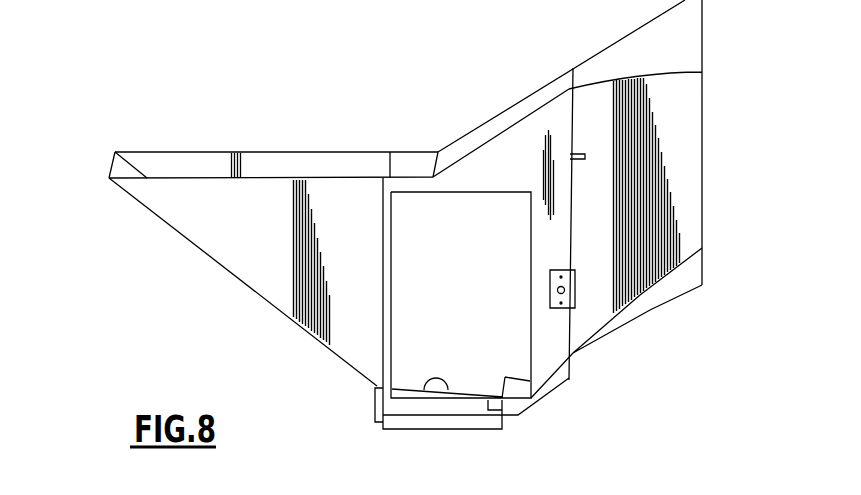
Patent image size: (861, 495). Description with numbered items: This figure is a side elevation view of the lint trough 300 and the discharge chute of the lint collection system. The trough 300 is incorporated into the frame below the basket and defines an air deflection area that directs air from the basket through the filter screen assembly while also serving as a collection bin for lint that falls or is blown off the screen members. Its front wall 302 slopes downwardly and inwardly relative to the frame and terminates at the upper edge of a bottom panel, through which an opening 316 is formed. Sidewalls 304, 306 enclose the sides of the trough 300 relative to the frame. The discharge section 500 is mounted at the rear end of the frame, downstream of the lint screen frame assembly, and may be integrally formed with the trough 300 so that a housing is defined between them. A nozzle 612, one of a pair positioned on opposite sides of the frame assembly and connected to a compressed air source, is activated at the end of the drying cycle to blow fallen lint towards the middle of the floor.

The lint trough 300 is at (370, 247).
The front wall 302 is at (123, 168).
The sidewall 304 is at (253, 165).
The sidewall 306 is at (272, 278).
The opening 316 is at (362, 410).
The discharge section 500 is at (556, 60).
The nozzle 612 is at (448, 388).